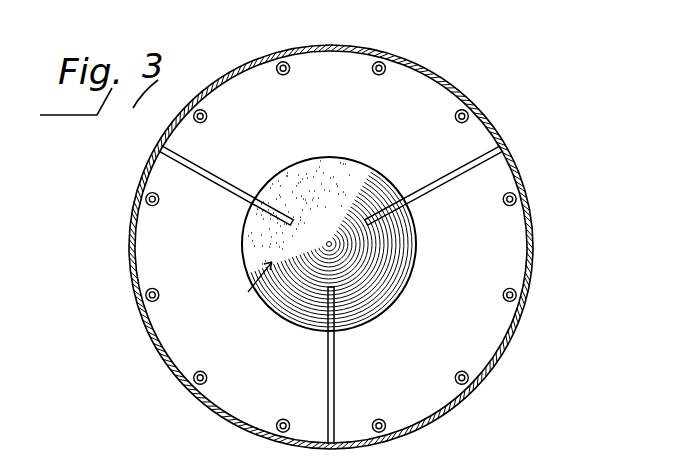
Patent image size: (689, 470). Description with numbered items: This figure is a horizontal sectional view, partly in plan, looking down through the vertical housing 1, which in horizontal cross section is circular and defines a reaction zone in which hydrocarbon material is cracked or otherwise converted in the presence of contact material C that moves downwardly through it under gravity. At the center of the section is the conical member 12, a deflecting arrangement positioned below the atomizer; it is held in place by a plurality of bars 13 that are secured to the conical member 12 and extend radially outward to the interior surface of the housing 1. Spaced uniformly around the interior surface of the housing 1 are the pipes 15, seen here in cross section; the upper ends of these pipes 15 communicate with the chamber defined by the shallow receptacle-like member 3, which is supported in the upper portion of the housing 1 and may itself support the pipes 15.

The housing 1 is at (491, 130).
The receptacle-like member 3 is at (130, 225).
The conical member 12 is at (409, 266).
The bars 13 is at (231, 160).
The pipes 15 is at (372, 65).
The contact material C is at (247, 293).